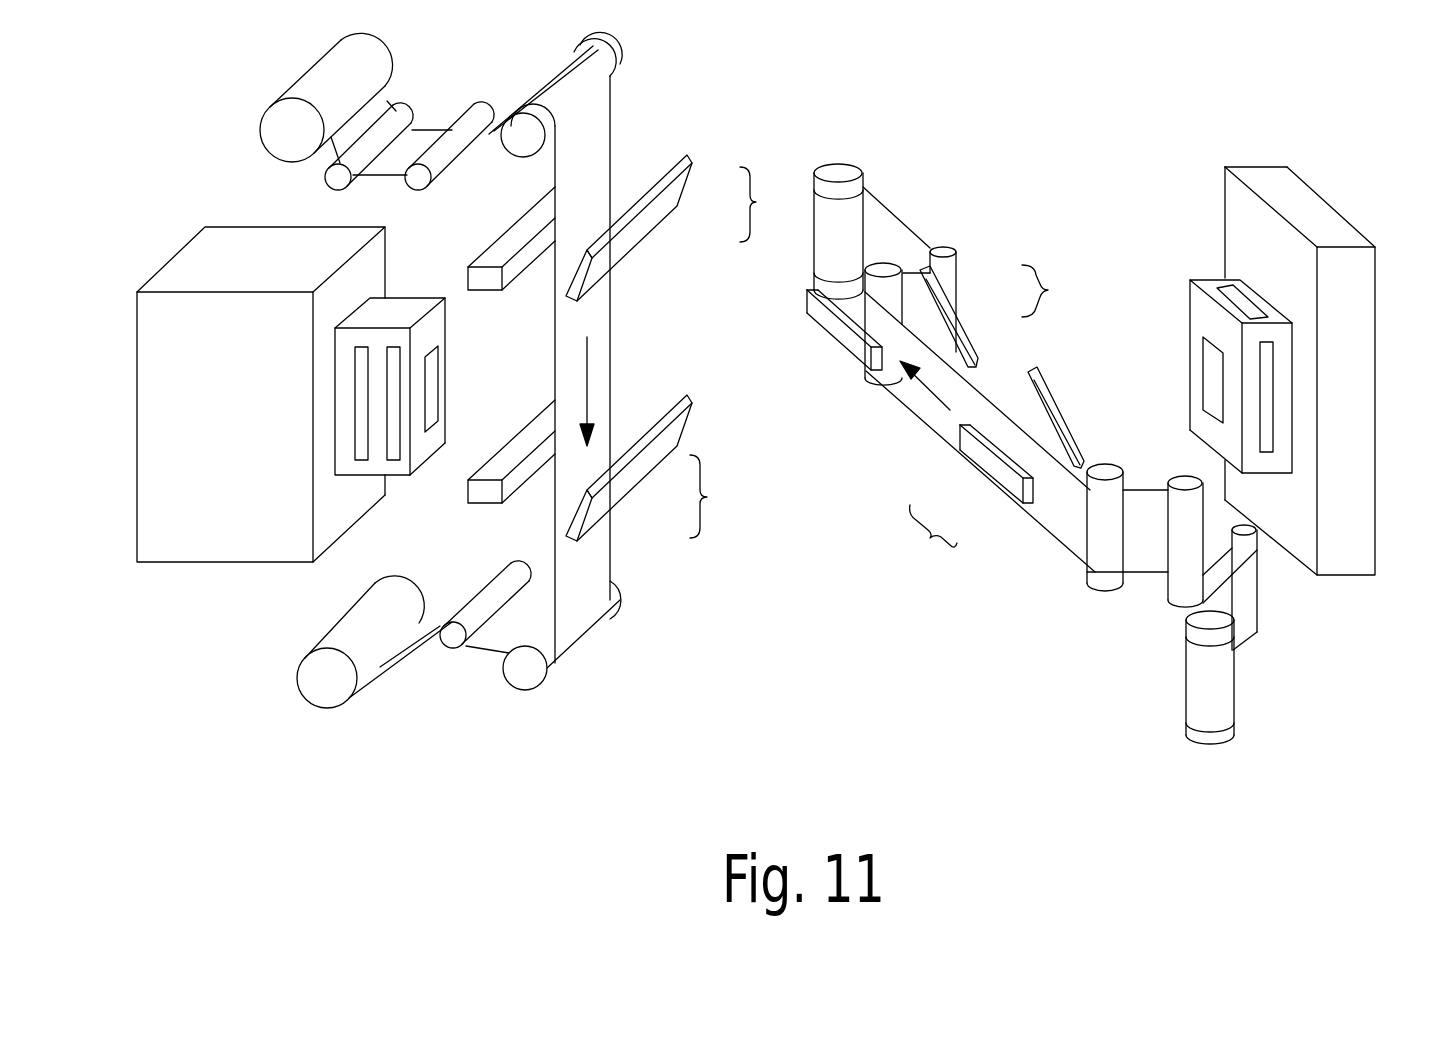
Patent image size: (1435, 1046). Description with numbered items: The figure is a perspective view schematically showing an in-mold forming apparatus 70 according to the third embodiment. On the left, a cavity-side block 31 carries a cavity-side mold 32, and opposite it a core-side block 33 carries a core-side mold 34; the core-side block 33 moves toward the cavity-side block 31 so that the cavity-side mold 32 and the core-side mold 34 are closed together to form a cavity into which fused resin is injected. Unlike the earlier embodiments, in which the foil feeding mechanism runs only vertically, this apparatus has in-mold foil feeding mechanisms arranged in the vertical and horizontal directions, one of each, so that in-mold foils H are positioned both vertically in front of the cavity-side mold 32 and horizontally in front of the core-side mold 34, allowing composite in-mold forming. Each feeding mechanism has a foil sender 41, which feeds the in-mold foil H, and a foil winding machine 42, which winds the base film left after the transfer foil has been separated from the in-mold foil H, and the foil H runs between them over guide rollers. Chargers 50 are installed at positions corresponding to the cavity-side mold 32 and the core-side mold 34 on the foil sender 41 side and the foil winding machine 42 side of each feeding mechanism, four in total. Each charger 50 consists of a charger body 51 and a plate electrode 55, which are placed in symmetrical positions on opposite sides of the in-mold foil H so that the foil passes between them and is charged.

The cavity-side block 31 is at (200, 553).
The cavity-side mold 32 is at (347, 430).
The core-side block 33 is at (1357, 390).
The core-side mold 34 is at (1282, 442).
The foil sender 41 is at (273, 118).
The foil winding machine 42 is at (325, 700).
The charger 50 is at (887, 368).
The charger body 51 is at (468, 275).
The plate electrode 55 is at (673, 198).
The in-mold forming apparatus 70 is at (1029, 96).
The in-mold foil H is at (598, 312).